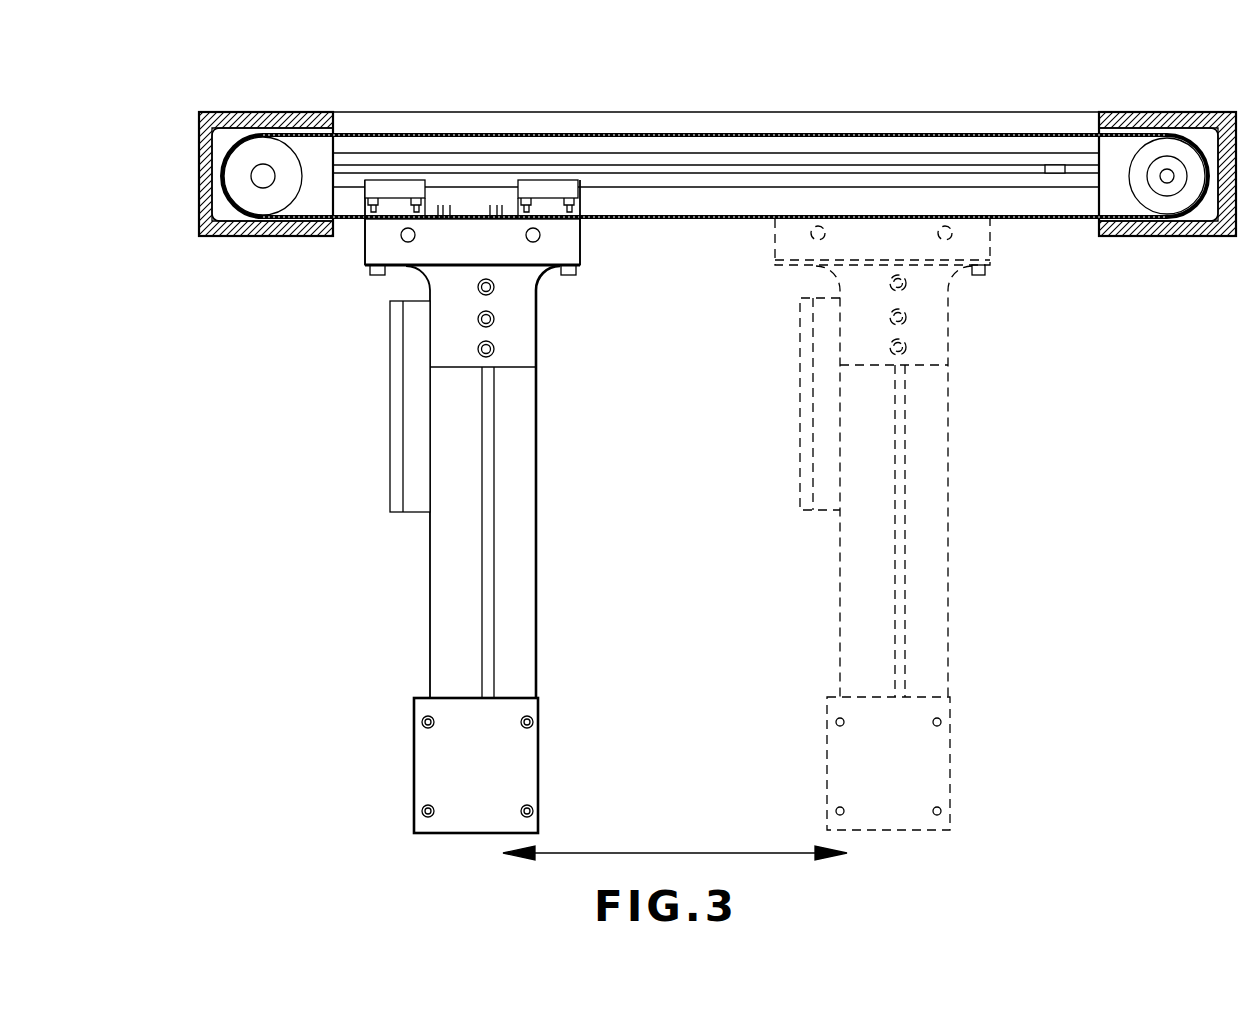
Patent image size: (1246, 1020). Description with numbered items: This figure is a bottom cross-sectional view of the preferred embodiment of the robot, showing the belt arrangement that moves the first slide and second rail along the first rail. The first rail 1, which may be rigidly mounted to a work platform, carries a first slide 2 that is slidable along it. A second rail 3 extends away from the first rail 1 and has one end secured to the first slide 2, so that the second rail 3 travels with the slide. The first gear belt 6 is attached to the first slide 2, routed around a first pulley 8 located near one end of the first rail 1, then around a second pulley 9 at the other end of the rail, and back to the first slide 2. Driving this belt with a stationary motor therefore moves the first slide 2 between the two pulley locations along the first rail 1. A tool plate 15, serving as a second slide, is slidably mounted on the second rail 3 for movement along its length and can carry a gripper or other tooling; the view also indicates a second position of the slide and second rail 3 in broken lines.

The first rail 1 is at (743, 112).
The first slide 2 is at (372, 240).
The second rail 3 is at (527, 545).
The first gear belt 6 is at (937, 133).
The first pulley 8 is at (257, 198).
The second pulley 9 is at (1177, 148).
The tool plate 15 is at (413, 423).